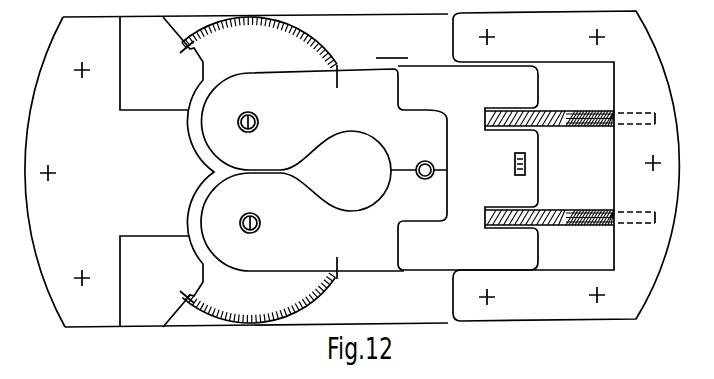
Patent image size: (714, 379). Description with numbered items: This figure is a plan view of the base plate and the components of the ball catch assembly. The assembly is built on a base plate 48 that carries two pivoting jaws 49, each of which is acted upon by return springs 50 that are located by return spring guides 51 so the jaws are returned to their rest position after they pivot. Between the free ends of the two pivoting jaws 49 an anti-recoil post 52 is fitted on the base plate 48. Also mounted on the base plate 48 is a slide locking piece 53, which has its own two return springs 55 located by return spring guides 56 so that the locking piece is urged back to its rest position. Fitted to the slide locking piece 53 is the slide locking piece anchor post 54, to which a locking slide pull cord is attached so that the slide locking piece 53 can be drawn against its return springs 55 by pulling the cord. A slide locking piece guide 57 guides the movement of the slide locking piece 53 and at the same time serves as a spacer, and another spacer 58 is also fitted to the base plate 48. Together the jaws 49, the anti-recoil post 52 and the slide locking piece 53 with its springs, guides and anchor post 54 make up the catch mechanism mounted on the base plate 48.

The base plate 48 is at (255, 170).
The pivoting jaws 49 is at (302, 172).
The return springs 50 is at (259, 170).
The return spring guides 51 is at (154, 172).
The anti-recoil post 52 is at (419, 154).
The slide locking piece 53 is at (394, 168).
The slide locking piece anchor post 54 is at (526, 166).
The return springs 55 is at (549, 186).
The return spring guides 56 is at (636, 187).
The slide locking piece guide 57 is at (566, 166).
The spacer 58 is at (76, 172).